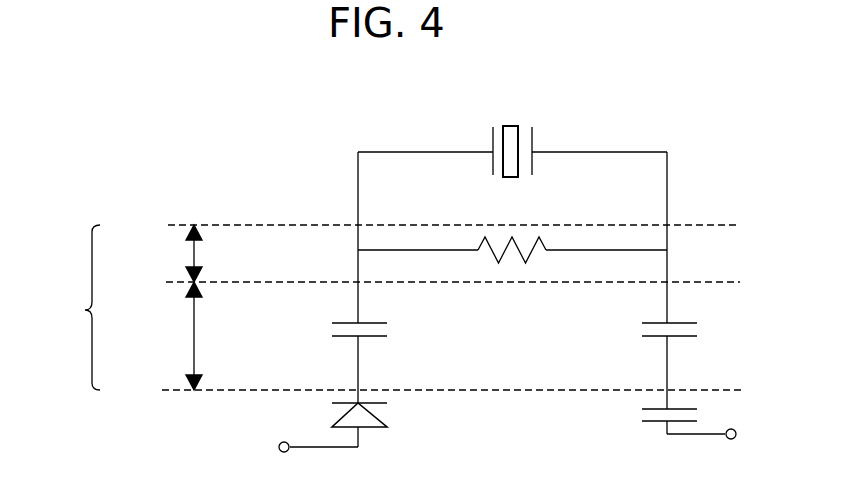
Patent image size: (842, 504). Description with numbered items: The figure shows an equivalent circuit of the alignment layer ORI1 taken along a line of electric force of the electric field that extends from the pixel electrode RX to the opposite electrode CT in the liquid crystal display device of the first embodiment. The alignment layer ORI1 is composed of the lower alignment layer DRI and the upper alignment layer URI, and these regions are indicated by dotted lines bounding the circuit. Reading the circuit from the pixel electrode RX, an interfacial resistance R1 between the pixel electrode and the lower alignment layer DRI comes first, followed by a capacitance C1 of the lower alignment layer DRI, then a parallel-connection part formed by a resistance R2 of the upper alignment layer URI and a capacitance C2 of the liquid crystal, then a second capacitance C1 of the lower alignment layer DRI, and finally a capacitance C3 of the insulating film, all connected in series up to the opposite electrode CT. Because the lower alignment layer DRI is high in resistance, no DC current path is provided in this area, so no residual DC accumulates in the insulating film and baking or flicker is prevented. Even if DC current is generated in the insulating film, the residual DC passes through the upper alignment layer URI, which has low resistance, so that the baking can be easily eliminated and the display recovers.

The capacitance of the liquid crystal C2 is at (512, 136).
The resistance of the upper alignment layer R2 is at (512, 230).
The capacitance of the lower alignment layer C1 is at (498, 330).
The interfacial resistance R1 is at (342, 425).
The capacitance of the insulating film C3 is at (685, 416).
The pixel electrode RX is at (301, 448).
The opposite electrode CT is at (719, 435).
The upper alignment layer URI is at (159, 253).
The lower alignment layer DRI is at (159, 336).
The alignment layer ORI1 is at (67, 307).